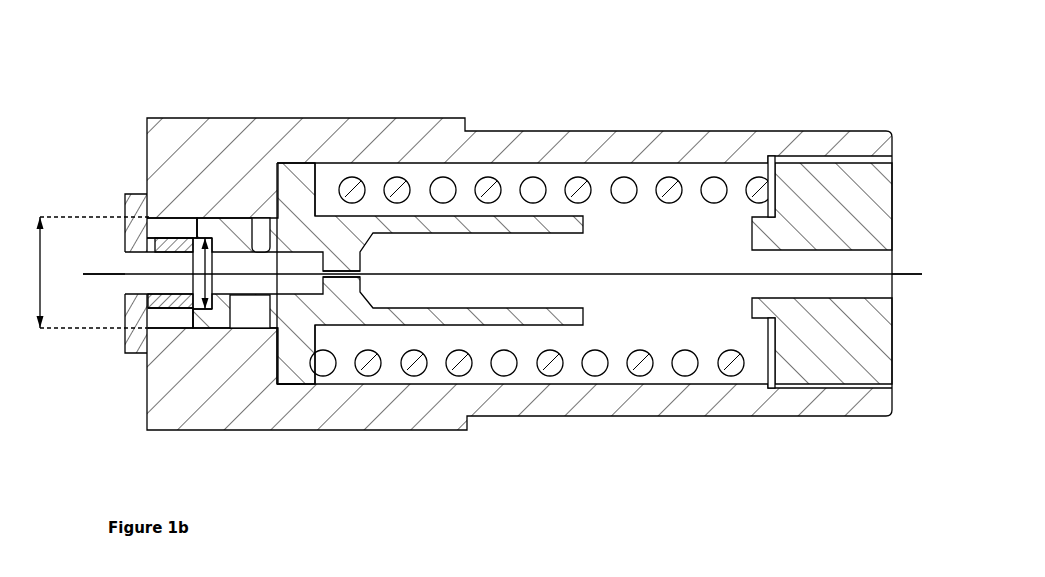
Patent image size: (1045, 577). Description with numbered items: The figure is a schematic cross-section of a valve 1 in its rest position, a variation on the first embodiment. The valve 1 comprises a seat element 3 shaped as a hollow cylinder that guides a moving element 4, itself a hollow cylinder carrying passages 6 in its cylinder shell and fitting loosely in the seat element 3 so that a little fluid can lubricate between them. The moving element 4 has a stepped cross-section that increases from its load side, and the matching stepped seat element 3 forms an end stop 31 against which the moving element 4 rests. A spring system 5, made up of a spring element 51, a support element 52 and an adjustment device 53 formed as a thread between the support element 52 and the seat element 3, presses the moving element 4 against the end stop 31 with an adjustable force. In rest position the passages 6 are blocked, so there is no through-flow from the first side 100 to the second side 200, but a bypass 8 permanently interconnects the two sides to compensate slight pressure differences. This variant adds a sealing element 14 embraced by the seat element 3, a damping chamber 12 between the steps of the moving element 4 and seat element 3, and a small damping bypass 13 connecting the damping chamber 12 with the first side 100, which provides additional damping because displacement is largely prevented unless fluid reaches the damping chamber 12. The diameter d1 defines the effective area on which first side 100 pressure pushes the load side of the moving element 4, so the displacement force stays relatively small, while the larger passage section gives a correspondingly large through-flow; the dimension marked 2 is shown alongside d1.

The valve 1 is at (489, 272).
The valve seat diameter 2 is at (90, 272).
The seat element 3 is at (297, 128).
The moving element 4 is at (305, 182).
The spring system 5 is at (642, 375).
The passages 6 is at (243, 312).
The bypass 8 is at (337, 272).
The damping chamber 12 is at (163, 223).
The damping bypass 13 is at (152, 247).
The sealing element 14 is at (130, 352).
The end stop 31 is at (278, 362).
The spring element 51 is at (593, 363).
The support element 52 is at (853, 378).
The adjustment device 53 is at (815, 387).
The first side 100 is at (92, 208).
The second side 200 is at (920, 216).
The diameter d1 is at (195, 287).